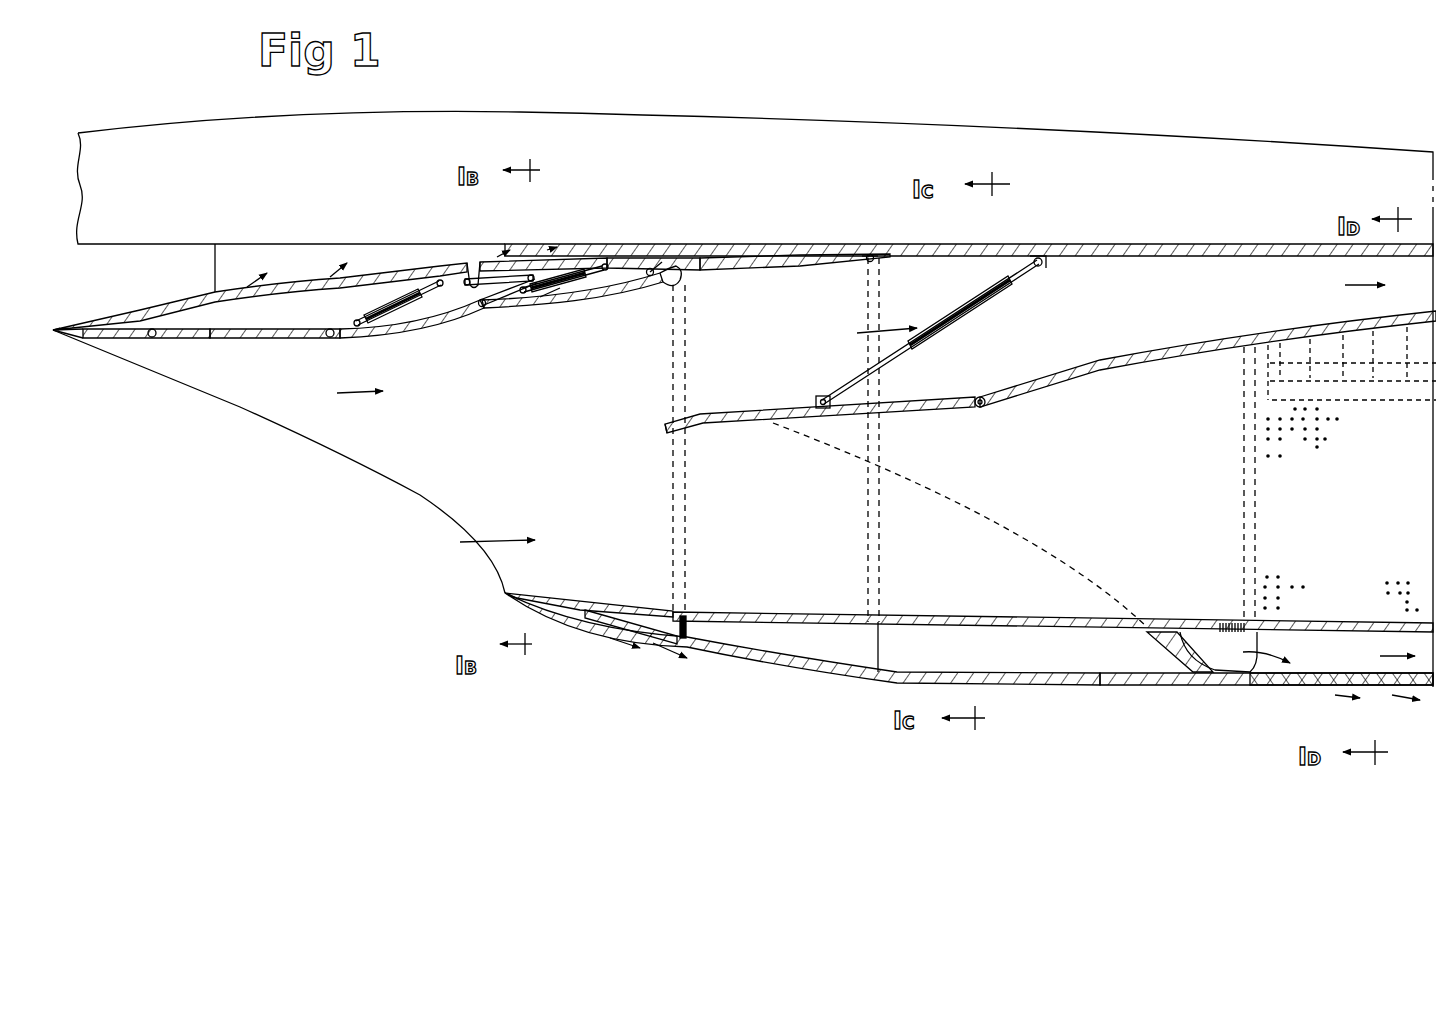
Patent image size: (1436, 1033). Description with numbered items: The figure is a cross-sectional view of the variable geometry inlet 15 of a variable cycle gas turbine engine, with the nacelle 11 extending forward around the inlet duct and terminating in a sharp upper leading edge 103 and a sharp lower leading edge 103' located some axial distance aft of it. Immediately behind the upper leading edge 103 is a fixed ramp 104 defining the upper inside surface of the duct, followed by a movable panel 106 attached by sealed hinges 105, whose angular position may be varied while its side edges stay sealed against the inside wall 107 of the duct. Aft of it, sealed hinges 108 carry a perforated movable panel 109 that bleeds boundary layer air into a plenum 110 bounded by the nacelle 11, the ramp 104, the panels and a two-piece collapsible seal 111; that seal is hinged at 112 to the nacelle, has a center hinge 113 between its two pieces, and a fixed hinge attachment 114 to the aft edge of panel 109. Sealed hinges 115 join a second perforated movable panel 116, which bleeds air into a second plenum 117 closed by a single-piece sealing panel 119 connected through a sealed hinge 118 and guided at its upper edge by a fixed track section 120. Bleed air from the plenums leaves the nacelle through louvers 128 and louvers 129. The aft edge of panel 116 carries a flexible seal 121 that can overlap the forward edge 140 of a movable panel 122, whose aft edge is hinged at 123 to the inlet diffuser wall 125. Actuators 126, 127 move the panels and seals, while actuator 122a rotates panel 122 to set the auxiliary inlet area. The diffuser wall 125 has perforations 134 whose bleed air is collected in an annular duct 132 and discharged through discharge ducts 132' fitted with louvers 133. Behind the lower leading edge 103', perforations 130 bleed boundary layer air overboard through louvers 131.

The nacelle 11 is at (1090, 250).
The variable geometry inlet 15 is at (345, 476).
The upper leading edge 103 is at (101, 307).
The lower leading edge 103' is at (773, 639).
The fixed ramp 104 is at (133, 340).
The sealed hinges 105 is at (165, 342).
The movable panel 106 is at (272, 340).
The inside wall 107 is at (440, 460).
The sealed hinges 108 is at (330, 340).
The perforated movable panel 109 is at (430, 330).
The plenum 110 is at (300, 316).
The two-piece collapsible seal 111 is at (510, 265).
The hinge 112 is at (470, 270).
The center hinge 113 is at (557, 265).
The fixed hinge attachment 114 is at (475, 301).
The sealed hinges 115 is at (482, 308).
The second perforated movable panel 116 is at (577, 305).
The second plenum 117 is at (645, 262).
The sealed hinge 118 is at (690, 248).
The sealing panel 119 is at (745, 275).
The fixed track section 120 is at (885, 262).
The flexible seal 121 is at (663, 285).
The movable panel 122 is at (898, 415).
The actuator 122a is at (990, 300).
The hinge 123 is at (982, 398).
The inlet diffuser wall 125 is at (1298, 308).
The actuator 126 is at (392, 312).
The actuator 127 is at (556, 292).
The louvers 128 is at (297, 282).
The louvers 129 is at (565, 268).
The perforations 130 is at (645, 588).
The louvers 131 is at (605, 630).
The annular duct 132 is at (1352, 381).
The discharge ducts 132' is at (1341, 698).
The louvers 133 is at (1308, 690).
The perforations 134 is at (1285, 457).
The forward edge 140 is at (668, 430).